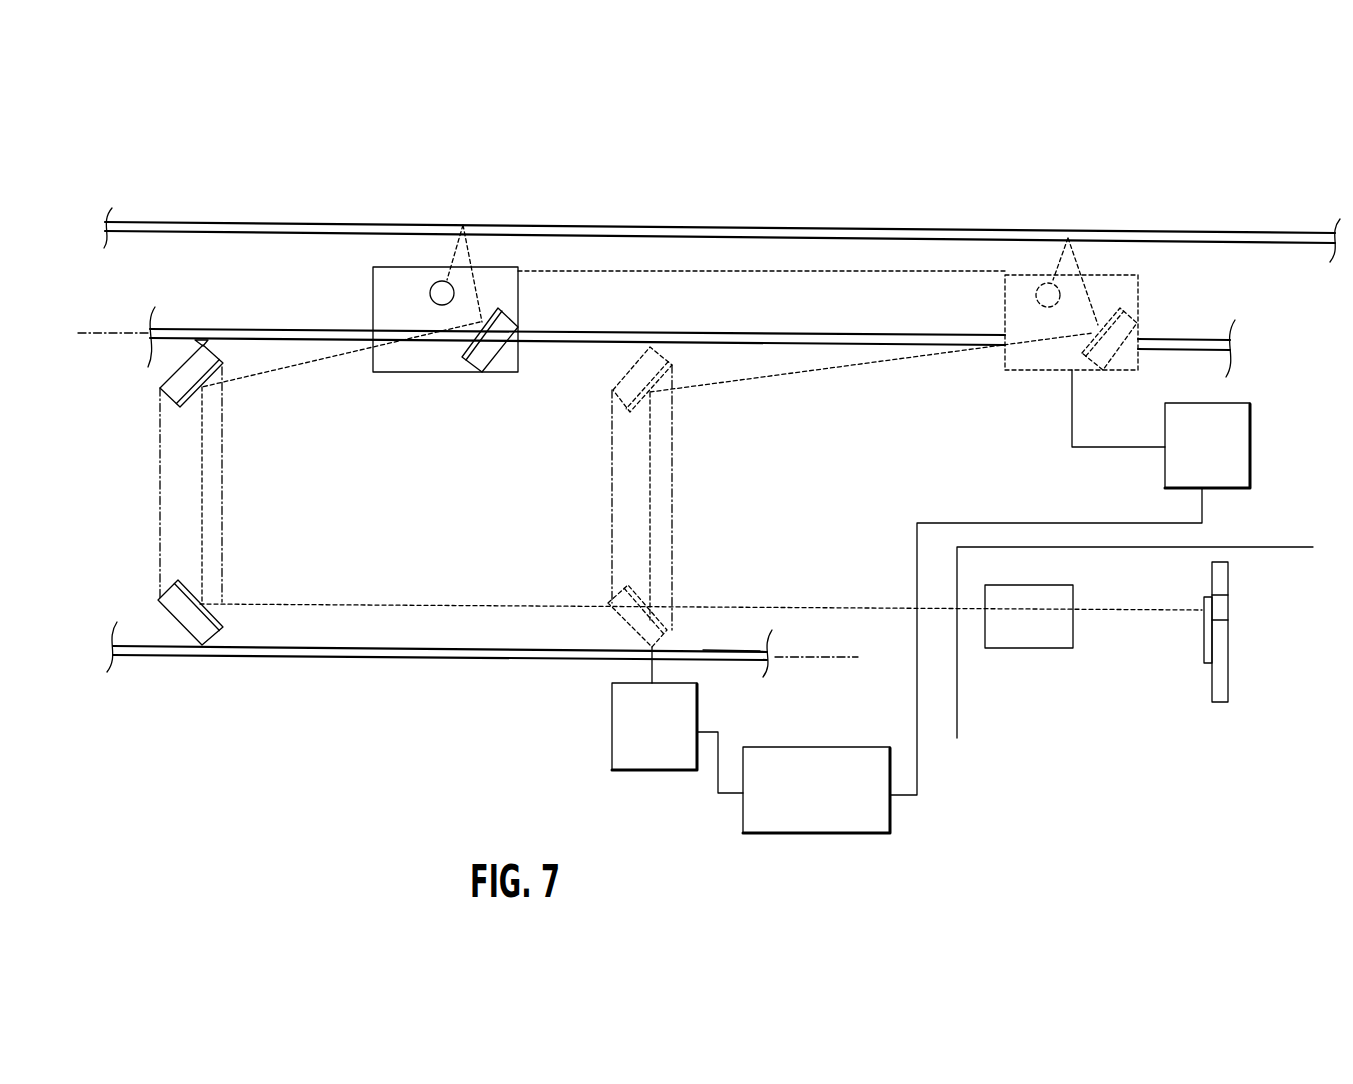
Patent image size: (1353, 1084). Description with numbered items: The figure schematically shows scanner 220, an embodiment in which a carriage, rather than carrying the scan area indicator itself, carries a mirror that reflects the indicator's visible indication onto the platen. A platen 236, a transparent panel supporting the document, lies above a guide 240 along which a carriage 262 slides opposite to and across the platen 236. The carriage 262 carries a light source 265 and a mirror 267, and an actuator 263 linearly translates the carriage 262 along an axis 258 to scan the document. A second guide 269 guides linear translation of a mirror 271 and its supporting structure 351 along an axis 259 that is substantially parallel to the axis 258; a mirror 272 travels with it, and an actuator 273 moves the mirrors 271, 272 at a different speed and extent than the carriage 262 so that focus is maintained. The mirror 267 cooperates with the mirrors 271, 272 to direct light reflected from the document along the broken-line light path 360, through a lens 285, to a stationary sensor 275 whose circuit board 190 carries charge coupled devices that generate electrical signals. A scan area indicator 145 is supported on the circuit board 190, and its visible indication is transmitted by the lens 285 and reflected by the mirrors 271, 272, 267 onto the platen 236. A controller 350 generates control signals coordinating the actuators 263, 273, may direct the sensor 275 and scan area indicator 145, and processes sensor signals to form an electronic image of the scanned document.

The scanner 220 is at (900, 156).
The platen 236 is at (832, 226).
The guide 240 is at (300, 327).
The axis 258 is at (95, 330).
The axis 259 is at (847, 657).
The carriage 262 is at (508, 374).
The actuator 263 is at (1215, 489).
The light source 265 is at (435, 287).
The mirror 267 is at (500, 345).
The guide 269 is at (703, 650).
The mirror 271 is at (160, 600).
The mirror 272 is at (165, 372).
The actuator 273 is at (660, 771).
The sensor 275 is at (1200, 675).
The lens 285 is at (1033, 650).
The scan area indicator 145 is at (1203, 600).
The circuit board 190 is at (1228, 671).
The controller 350 is at (818, 833).
The supporting structure 351 is at (645, 647).
The light path 360 is at (388, 607).